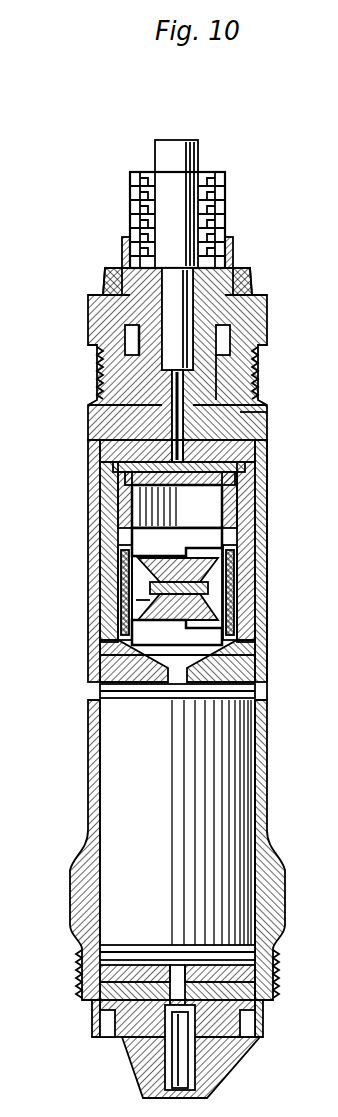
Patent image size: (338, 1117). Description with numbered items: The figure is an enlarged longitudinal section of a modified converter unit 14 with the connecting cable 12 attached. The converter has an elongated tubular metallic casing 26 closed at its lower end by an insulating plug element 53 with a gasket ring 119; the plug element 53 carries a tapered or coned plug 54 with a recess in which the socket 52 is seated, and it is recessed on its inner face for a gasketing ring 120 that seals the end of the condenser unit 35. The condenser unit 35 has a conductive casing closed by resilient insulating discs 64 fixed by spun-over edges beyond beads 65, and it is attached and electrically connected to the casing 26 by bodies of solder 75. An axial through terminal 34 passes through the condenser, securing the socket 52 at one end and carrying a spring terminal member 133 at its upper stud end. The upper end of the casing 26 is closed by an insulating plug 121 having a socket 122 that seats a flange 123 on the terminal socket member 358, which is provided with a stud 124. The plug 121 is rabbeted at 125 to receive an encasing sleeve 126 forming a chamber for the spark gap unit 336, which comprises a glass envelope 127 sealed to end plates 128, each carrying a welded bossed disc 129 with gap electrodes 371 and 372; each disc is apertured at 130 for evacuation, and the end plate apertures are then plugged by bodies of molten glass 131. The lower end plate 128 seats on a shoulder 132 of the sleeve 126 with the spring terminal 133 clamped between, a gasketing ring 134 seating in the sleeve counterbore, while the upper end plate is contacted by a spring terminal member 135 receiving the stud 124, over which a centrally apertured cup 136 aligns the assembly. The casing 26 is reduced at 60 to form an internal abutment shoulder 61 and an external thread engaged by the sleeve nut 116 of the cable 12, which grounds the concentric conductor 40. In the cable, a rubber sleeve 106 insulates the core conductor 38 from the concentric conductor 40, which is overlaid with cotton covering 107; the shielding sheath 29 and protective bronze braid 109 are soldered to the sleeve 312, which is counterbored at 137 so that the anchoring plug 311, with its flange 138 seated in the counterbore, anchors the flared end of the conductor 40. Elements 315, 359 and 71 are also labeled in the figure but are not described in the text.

The covering of cotton 107 is at (182, 146).
The connecting cable 12 is at (204, 164).
The shielding sheath 29 is at (225, 194).
The protective bronze braid 109 is at (225, 218).
The concentric conductor 40 is at (233, 242).
The anchoring plug 311 is at (90, 314).
The sleeve 312 is at (106, 270).
The shoulder 315 is at (100, 293).
The threads 359 is at (92, 400).
The terminal socket member 358 is at (95, 424).
The sleeve nut 116 is at (266, 322).
The flange 138 is at (248, 282).
The counterbore 137 is at (252, 304).
The sleeve of rubber 106 is at (259, 352).
The core conductor 38 is at (256, 368).
The reduced section of casing 60 is at (254, 390).
The step 71 is at (258, 406).
The abutment shoulder 61 is at (267, 430).
The plug 121 is at (96, 451).
The socket 122 is at (262, 464).
The converter unit 14 is at (270, 582).
The rabbet 125 is at (108, 464).
The flange 123 is at (118, 474).
The encasing sleeve 126 is at (125, 490).
The stud 124 is at (132, 500).
The spring terminal member 135 is at (152, 520).
The centrally apertured cup 136 is at (238, 502).
The aperture 130 is at (118, 552).
The bodies of molten glass 131 is at (164, 638).
The end plates 128 is at (223, 548).
The gap electrode 372 is at (138, 564).
The spark gap unit 336 is at (150, 588).
The gap electrode 371 is at (138, 614).
The glass envelope 127 is at (130, 616).
The bossed disc 129 is at (136, 626).
The shoulder 132 is at (242, 644).
The spring terminal member 133 is at (122, 664).
The through terminal 34 is at (252, 658).
The gasketing ring 134 is at (256, 692).
The tubular metallic casing 26 is at (262, 734).
The bodies of solder 75 is at (262, 808).
The condenser unit 35 is at (232, 864).
The gasketing ring 120 is at (80, 992).
The beads 65 is at (258, 954).
The insulating discs 64 is at (262, 978).
The plug element 53 is at (258, 1024).
The gasket ring 119 is at (102, 1022).
The coned plug 54 is at (212, 1094).
The socket 52 is at (194, 1070).